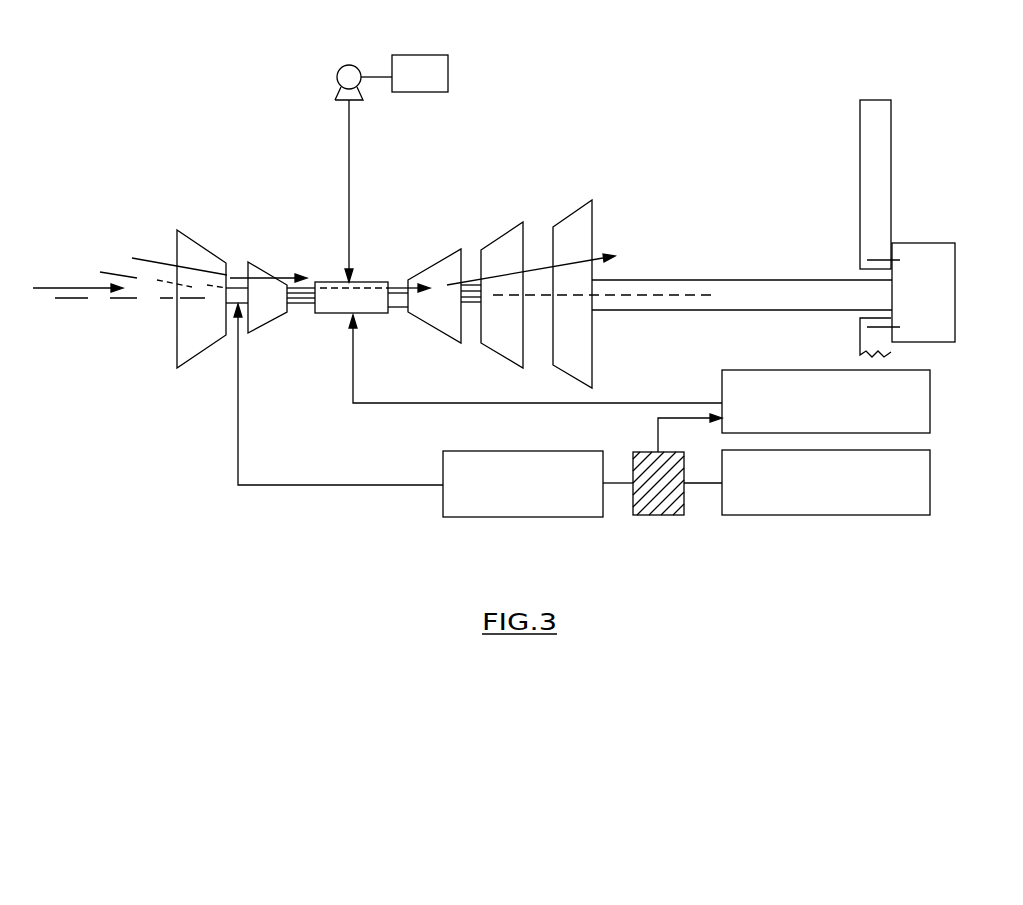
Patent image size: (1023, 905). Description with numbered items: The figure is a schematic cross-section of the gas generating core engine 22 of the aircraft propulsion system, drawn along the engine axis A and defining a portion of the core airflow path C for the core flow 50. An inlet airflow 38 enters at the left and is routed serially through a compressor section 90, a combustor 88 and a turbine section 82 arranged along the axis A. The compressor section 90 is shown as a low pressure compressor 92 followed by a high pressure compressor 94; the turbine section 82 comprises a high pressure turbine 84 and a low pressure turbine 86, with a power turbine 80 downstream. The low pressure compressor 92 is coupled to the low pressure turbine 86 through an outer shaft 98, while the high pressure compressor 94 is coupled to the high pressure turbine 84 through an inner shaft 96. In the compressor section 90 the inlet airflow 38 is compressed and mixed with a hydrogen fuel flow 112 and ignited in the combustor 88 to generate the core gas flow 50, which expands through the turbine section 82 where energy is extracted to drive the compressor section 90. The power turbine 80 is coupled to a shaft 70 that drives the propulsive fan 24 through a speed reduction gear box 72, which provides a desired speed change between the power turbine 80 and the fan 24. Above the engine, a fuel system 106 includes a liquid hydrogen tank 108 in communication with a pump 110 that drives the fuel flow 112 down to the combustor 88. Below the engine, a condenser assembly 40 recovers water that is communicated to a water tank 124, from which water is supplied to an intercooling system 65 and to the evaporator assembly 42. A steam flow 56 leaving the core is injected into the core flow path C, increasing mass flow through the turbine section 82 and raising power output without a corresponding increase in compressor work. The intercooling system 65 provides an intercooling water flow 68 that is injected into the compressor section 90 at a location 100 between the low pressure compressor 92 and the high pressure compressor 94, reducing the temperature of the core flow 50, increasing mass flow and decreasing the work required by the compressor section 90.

The core engine 22 is at (181, 122).
The propulsive fan 24 is at (880, 167).
The inlet airflow 38 is at (50, 288).
The condenser assembly 40 is at (840, 483).
The evaporator assembly 42 is at (840, 401).
The core gas flow 50 is at (395, 283).
The steam flow 56 is at (355, 382).
The intercooling system 65 is at (537, 518).
The intercooling water flow 68 is at (240, 457).
The shaft 70 is at (640, 293).
The speed reduction gear box 72 is at (920, 253).
The power turbine 80 is at (590, 230).
The turbine section 82 is at (530, 210).
The high pressure turbine 84 is at (437, 270).
The low pressure turbine 86 is at (502, 242).
The combustor 88 is at (368, 300).
The compressor section 90 is at (297, 210).
The low pressure compressor 92 is at (197, 248).
The high pressure compressor 94 is at (260, 283).
The inner shaft 96 is at (307, 303).
The outer shaft 98 is at (292, 303).
The injection location 100 is at (231, 355).
The fuel system 106 is at (258, 45).
The liquid hydrogen tank 108 is at (448, 65).
The pump 110 is at (338, 75).
The fuel flow 112 is at (352, 155).
The water tank 124 is at (658, 517).
The axis A is at (97, 298).
The core airflow path C is at (163, 258).